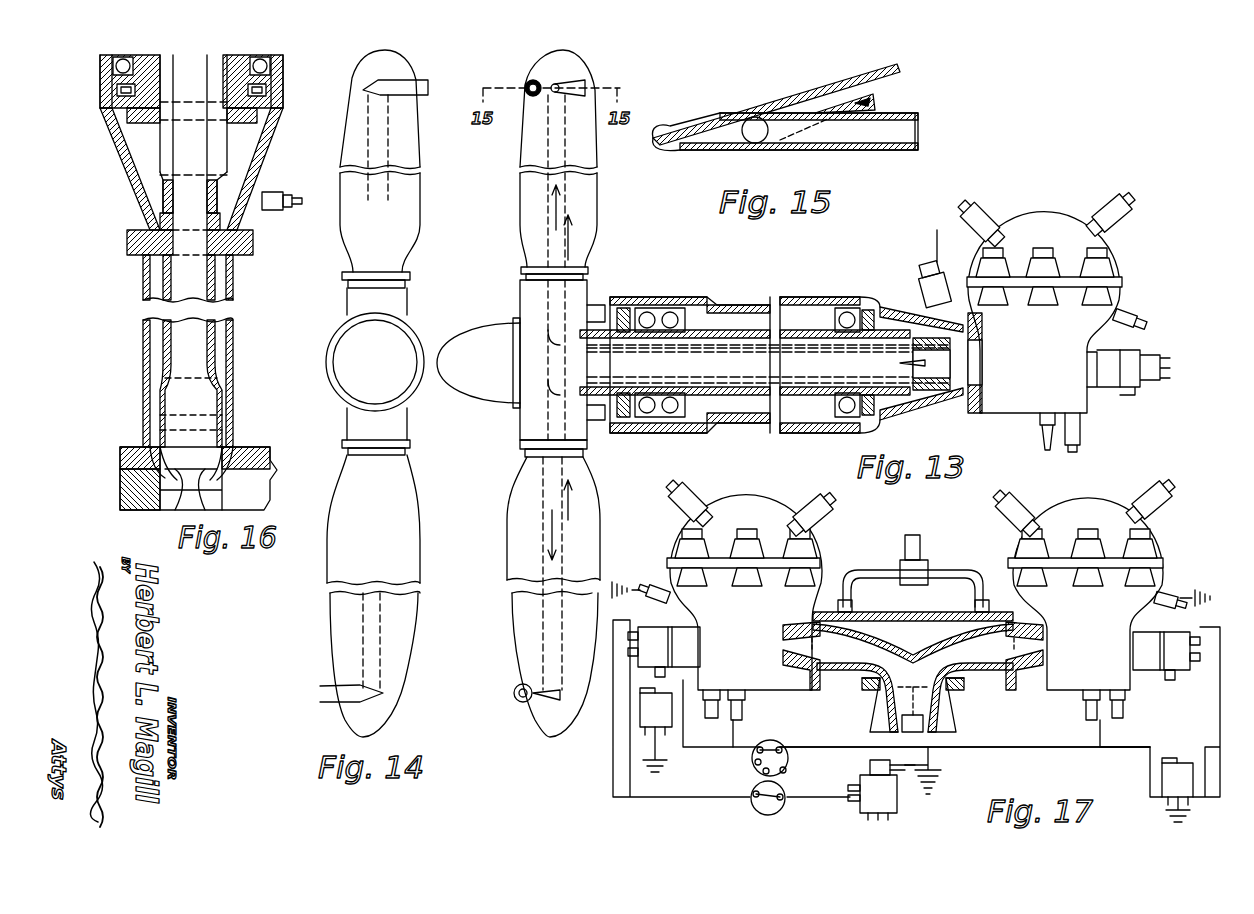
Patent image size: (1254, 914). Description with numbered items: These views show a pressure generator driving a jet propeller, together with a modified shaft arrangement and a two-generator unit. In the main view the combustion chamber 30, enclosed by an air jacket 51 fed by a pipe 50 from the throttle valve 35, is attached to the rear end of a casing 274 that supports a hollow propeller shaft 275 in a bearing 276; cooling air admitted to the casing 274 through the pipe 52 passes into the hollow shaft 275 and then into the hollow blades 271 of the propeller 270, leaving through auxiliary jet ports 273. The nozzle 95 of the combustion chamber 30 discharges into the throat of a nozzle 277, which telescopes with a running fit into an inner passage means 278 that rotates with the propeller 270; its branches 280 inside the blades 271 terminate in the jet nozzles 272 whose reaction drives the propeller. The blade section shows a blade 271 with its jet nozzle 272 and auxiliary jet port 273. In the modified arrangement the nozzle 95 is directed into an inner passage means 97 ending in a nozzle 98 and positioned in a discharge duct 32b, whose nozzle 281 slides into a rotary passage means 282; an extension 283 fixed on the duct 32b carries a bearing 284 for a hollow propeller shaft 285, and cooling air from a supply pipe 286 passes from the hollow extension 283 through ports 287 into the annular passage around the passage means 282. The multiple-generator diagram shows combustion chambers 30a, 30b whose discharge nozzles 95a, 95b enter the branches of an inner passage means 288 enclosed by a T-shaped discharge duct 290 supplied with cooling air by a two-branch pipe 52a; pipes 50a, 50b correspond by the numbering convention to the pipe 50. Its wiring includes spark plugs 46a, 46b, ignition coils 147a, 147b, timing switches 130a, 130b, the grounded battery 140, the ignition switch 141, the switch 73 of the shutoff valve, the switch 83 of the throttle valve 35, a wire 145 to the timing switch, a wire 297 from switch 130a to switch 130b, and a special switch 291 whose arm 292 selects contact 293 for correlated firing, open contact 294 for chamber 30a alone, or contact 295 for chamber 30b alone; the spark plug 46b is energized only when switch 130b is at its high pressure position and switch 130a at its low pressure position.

In FIG. 16, the bearing 284 is at (283, 62).
In FIG. 16, the hollow propeller shaft 285 is at (266, 90).
In FIG. 16, the extension 283 is at (257, 125).
In FIG. 16, the ports 287 is at (218, 135).
In FIG. 16, the rotary passage means 282 is at (163, 170).
In FIG. 16, the nozzle 281 is at (160, 200).
In FIG. 16, the supply pipe 286 is at (288, 212).
In FIG. 16, the nozzle 98 is at (163, 272).
In FIG. 16, the discharge duct 32b is at (233, 330).
In FIG. 16, the inner passage means 97 is at (163, 340).
In FIG. 16, the nozzle 95 is at (175, 480).
In FIG. 13, the nozzle 95 is at (1012, 368).
In FIG. 16, the combustion chamber 30 is at (120, 478).
In FIG. 13, the combustion chamber 30 is at (1122, 247).
In FIG. 14, the airplane propeller 270 is at (415, 490).
In FIG. 13, the airplane propeller 270 is at (598, 238).
In FIG. 15, the hollow blades 271 is at (822, 84).
In FIG. 13, the hollow blades 271 is at (475, 568).
In FIG. 13, the branches 280 is at (495, 531).
In FIG. 15, the jet nozzles 272 is at (880, 150).
In FIG. 13, the jet nozzles 272 is at (500, 680).
In FIG. 15, the auxiliary jet ports 273 is at (870, 101).
In FIG. 13, the auxiliary jet ports 273 is at (512, 716).
In FIG. 13, the bearing 276 is at (650, 315).
In FIG. 13, the hollow propeller shaft 275 is at (735, 330).
In FIG. 13, the casing 274 is at (735, 433).
In FIG. 13, the nozzle 277 is at (958, 400).
In FIG. 13, the inner passage means 278 is at (925, 395).
In FIG. 13, the pipe 52 is at (918, 262).
In FIG. 13, the air jacket 51 is at (985, 200).
In FIG. 13, the pipe 50 is at (1100, 195).
In FIG. 17, the combustion chamber 30a is at (822, 548).
In FIG. 17, the combustion chamber 30b is at (1160, 545).
In FIG. 17, the spark plug 50a is at (690, 480).
In FIG. 17, the spark plug 50b is at (1165, 505).
In FIG. 17, the pipe 52a is at (925, 545).
In FIG. 17, the discharge nozzle 95a is at (780, 618).
In FIG. 17, the discharge nozzle 95b is at (1045, 648).
In FIG. 17, the first timing switch 130a is at (655, 645).
In FIG. 17, the timing switch 130b is at (1180, 670).
In FIG. 17, the ignition coil 147a is at (640, 700).
In FIG. 17, the ignition coil 147b is at (1162, 770).
In FIG. 17, the spark plug 46a is at (745, 708).
In FIG. 17, the spark plug 46b is at (1083, 710).
In FIG. 17, the T-shaped discharge duct 290 is at (922, 597).
In FIG. 17, the inner passage means 288 is at (930, 703).
In FIG. 17, the special switch 291 is at (775, 745).
In FIG. 17, the switch arm 292 is at (779, 748).
In FIG. 17, the contact 293 is at (754, 762).
In FIG. 17, the blank or open contact 294 is at (762, 773).
In FIG. 17, the contact 295 is at (788, 770).
In FIG. 17, the wire 297 is at (1032, 747).
In FIG. 17, the ignition switch 141 is at (755, 810).
In FIG. 17, the wire 145 is at (648, 797).
In FIG. 17, the throttle valve 35 is at (858, 812).
In FIG. 17, the ignition switch 83 is at (862, 775).
In FIG. 17, the ignition switch 73 is at (915, 765).
In FIG. 17, the grounded battery 140 is at (935, 788).